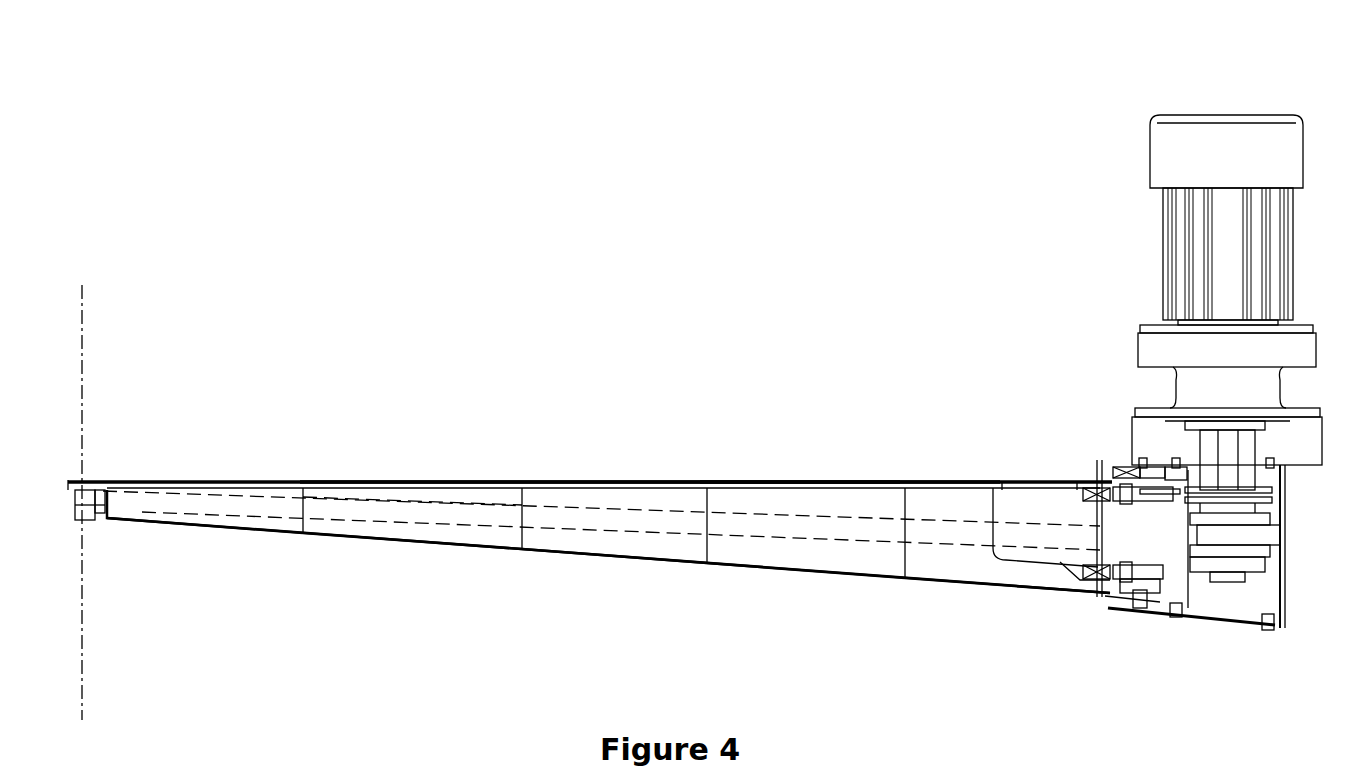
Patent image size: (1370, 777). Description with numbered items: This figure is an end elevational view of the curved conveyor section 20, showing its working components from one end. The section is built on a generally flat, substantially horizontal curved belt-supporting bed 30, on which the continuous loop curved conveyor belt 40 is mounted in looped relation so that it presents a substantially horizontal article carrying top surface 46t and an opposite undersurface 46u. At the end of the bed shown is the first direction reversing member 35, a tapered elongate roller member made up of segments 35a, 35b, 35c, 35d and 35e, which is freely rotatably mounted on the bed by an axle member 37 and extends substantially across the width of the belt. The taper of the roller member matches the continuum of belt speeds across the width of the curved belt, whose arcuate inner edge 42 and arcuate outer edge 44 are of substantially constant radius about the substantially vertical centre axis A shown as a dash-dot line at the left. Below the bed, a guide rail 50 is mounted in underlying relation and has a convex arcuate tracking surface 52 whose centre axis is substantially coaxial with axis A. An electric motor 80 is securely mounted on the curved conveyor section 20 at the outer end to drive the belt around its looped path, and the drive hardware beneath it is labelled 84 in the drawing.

The curved conveyor section 20 is at (594, 96).
The belt-supporting bed 30 is at (790, 489).
The first direction reversing member 35 is at (606, 529).
The roller segment 35a is at (240, 527).
The roller segment 35b is at (428, 532).
The roller segment 35c is at (622, 548).
The roller segment 35d is at (825, 555).
The roller segment 35e is at (965, 572).
The axle member 37 is at (448, 510).
The continuous loop curved conveyor belt 40 is at (885, 482).
The arcuate inner edge 42 is at (123, 481).
The arcuate outer edge 44 is at (1184, 478).
The article carrying top surface 46t is at (568, 482).
The undersurface 46u is at (981, 489).
The guide rail 50 is at (1082, 497).
The convex arcuate tracking surface 52 is at (1118, 520).
The electric motor 80 is at (1294, 238).
The drive hub 84 is at (1290, 492).
The centre axis A is at (82, 348).